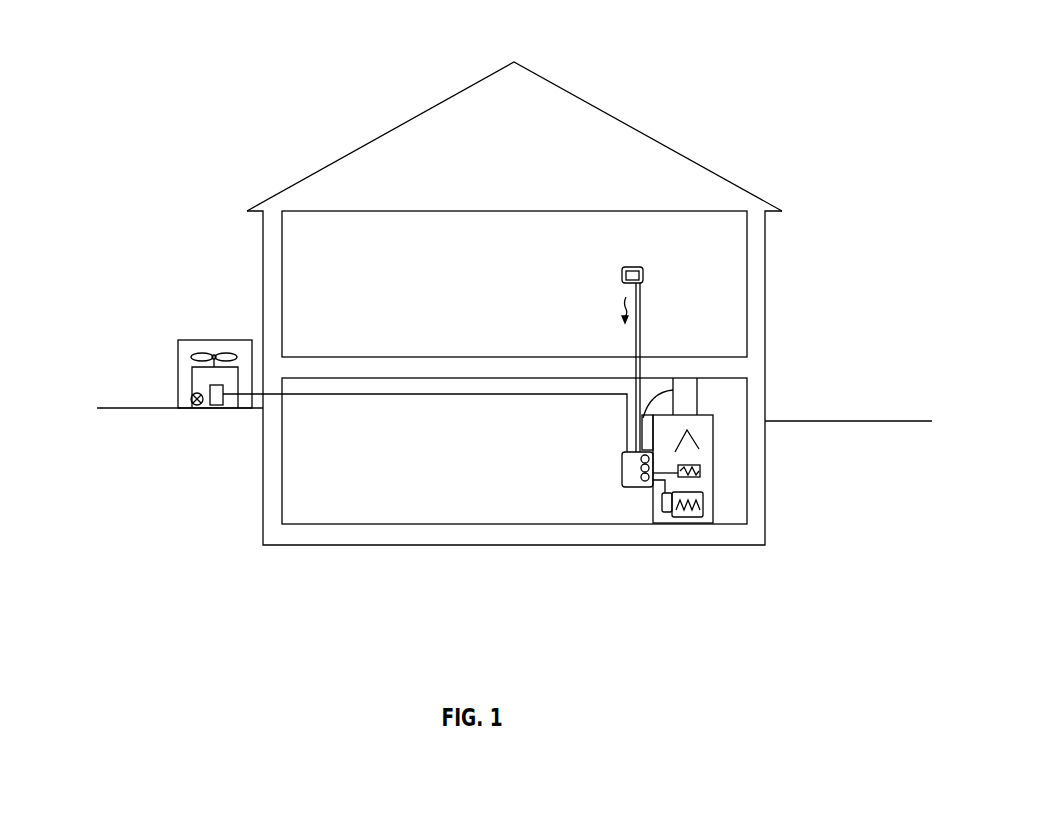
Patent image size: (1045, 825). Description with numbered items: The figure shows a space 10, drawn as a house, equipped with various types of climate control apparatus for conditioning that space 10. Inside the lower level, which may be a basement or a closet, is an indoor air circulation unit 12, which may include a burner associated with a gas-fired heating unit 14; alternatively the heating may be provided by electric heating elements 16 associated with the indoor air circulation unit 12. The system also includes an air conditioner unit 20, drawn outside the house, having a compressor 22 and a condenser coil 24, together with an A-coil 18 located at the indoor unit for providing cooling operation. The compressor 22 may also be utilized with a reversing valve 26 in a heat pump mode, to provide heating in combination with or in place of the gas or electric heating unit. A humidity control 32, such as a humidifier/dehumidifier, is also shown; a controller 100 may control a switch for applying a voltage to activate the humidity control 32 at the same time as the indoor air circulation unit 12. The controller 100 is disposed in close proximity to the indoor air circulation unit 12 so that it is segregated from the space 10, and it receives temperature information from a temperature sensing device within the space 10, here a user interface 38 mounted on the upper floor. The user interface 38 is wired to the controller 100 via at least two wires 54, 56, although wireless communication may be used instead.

The space 10 is at (735, 283).
The indoor air circulation unit 12 is at (713, 465).
The gas-fired heating unit 14 is at (672, 519).
The electric heating elements 16 is at (702, 471).
The A-coil 18 is at (713, 443).
The air conditioner unit 20 is at (178, 340).
The compressor 22 is at (216, 407).
The condenser coil 24 is at (210, 388).
The reversing valve 26 is at (195, 406).
The humidity control 32 is at (673, 390).
The user interface 38 is at (622, 267).
The wire 54 is at (636, 340).
The wire 56 is at (640, 345).
The controller 100 is at (632, 485).